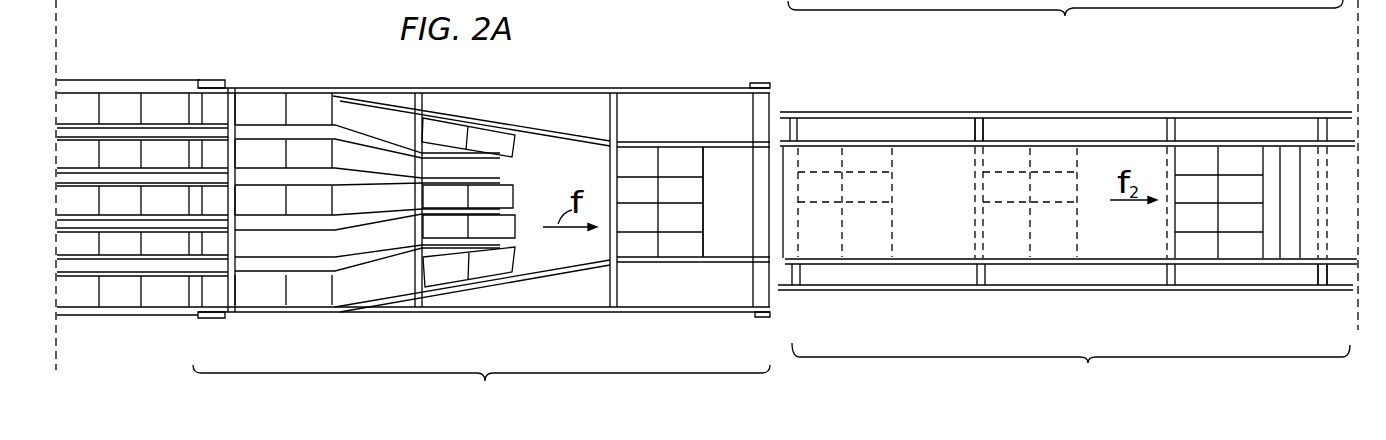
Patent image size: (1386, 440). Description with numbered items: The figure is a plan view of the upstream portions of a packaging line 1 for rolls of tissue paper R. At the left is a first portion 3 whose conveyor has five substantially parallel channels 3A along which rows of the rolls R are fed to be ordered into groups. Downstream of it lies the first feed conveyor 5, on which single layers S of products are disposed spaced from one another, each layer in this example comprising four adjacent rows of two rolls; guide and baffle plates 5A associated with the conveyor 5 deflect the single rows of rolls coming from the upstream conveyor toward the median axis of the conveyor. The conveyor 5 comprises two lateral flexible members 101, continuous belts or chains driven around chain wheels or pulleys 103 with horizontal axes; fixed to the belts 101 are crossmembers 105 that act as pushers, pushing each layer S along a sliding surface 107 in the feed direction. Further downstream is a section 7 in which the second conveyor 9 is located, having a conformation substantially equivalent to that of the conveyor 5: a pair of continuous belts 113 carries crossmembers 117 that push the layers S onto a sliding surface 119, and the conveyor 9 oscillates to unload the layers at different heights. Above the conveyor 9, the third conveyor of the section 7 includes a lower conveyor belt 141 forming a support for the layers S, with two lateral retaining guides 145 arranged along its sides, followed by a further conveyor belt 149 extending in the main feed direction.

The line 1 is at (667, 12).
The first portion 3 is at (153, 343).
The channels 3A is at (192, 100).
The first feed conveyor 5 is at (475, 328).
The guide and baffle plates 5A is at (366, 93).
The section 7 is at (1069, 198).
The second conveyor 9 is at (1170, 100).
The lateral flexible members 101 is at (543, 88).
The chain wheels or pulleys 103 is at (217, 80).
The crossmembers 105 is at (405, 125).
The sliding surface 107 is at (703, 177).
The continuous belts 113 is at (1300, 113).
The crossmembers 117 is at (977, 173).
The sliding surface 119 is at (943, 228).
The lower conveyor belt 141 is at (1142, 238).
The lateral retaining guides 145 is at (1113, 152).
The further conveyor belt 149 is at (1343, 250).
The rolls of tissue paper R is at (298, 105).
The layers S is at (903, 163).